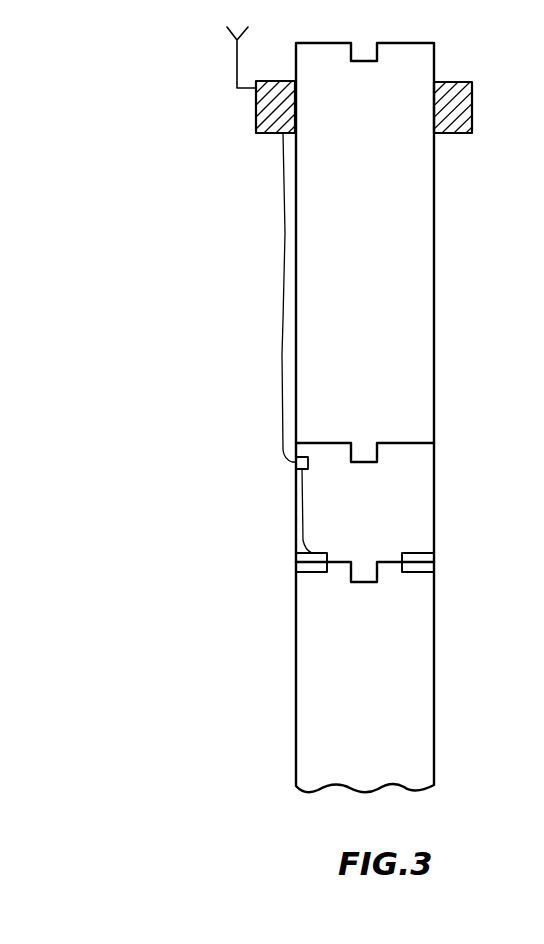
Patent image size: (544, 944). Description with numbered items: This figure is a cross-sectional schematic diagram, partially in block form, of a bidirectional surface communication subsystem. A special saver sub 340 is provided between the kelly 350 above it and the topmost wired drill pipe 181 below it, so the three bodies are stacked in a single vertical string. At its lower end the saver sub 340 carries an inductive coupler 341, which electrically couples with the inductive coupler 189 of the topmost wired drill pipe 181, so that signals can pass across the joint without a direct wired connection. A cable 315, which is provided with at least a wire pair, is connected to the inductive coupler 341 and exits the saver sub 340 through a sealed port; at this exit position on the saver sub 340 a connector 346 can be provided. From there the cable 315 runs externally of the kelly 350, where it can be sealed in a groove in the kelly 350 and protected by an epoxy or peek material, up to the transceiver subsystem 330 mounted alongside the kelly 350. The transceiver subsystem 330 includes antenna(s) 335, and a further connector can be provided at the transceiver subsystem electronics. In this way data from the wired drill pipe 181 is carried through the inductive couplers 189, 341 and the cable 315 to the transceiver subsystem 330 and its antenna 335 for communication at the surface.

The kelly 350 is at (420, 279).
The transceiver subsystem 330 is at (268, 133).
The antenna 335 is at (237, 69).
The cable 315 is at (282, 354).
The saver sub 340 is at (420, 513).
The connector 346 is at (308, 462).
The inductive coupler 341 is at (421, 555).
The inductive coupler 189 is at (433, 567).
The topmost wired drill pipe 181 is at (318, 704).